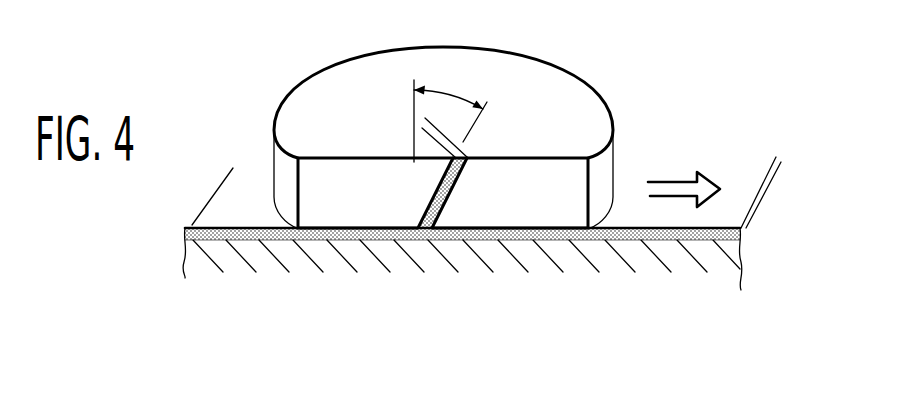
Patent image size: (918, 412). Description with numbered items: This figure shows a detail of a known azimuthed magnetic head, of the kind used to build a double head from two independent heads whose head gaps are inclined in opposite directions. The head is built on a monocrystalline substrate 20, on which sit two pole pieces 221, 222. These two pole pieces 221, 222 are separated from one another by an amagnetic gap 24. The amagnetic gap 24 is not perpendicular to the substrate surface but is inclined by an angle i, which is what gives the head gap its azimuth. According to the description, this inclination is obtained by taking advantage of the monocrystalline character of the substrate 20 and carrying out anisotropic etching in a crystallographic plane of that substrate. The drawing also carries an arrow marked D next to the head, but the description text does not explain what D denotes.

The monocrystalline substrate 20 is at (722, 258).
The pole piece 221 is at (373, 244).
The pole piece 222 is at (558, 244).
The amagnetic gap 24 is at (437, 203).
The direction of movement D is at (674, 182).
The angle of inclination i is at (450, 110).